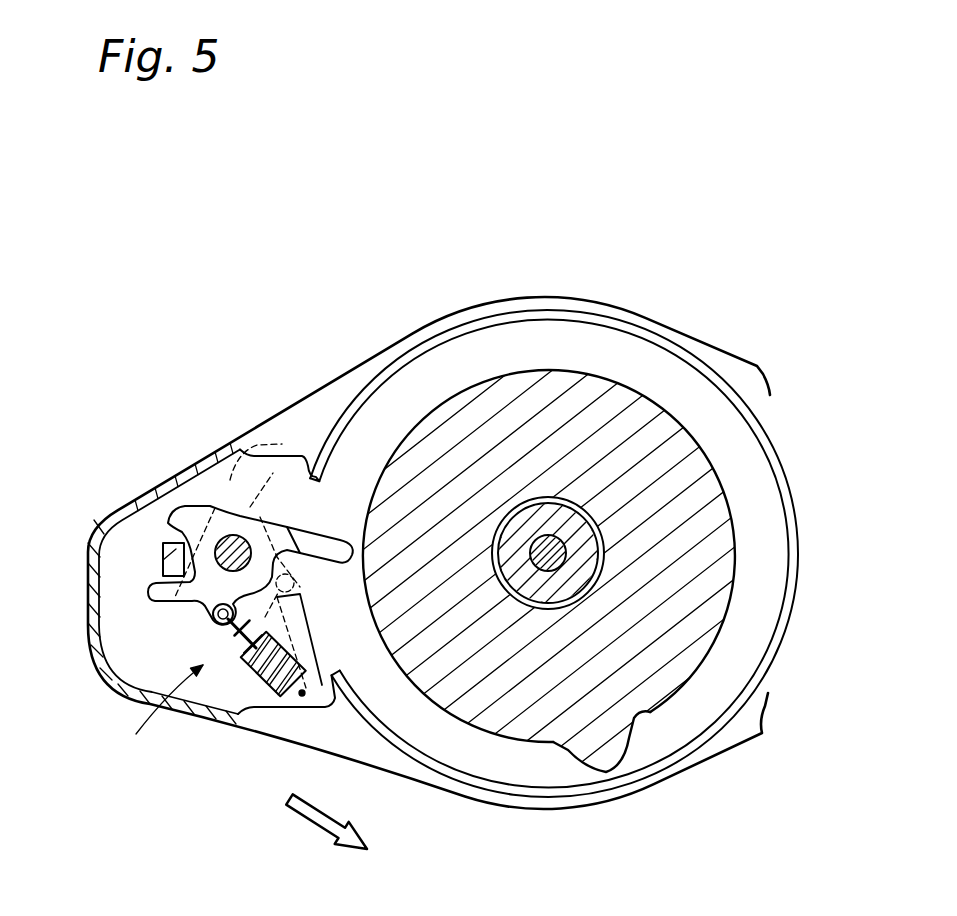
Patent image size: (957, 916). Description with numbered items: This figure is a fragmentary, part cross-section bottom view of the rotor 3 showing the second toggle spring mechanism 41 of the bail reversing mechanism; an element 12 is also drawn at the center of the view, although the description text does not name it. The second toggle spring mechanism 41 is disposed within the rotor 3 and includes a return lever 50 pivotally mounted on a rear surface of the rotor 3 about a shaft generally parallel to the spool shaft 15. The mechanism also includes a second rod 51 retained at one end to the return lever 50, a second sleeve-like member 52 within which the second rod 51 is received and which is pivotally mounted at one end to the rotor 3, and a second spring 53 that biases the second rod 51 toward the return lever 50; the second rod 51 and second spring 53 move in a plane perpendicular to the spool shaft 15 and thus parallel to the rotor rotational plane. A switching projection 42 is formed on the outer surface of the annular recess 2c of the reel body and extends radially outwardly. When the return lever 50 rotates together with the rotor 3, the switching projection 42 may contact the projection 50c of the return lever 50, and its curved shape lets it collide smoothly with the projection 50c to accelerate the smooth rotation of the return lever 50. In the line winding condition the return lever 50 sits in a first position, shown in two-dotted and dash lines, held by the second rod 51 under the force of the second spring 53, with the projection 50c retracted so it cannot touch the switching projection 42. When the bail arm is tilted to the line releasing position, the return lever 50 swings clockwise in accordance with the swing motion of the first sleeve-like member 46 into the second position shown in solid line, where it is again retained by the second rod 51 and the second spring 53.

The rotor 3 is at (522, 304).
The annular recess 2c is at (717, 468).
The reel hub 12 is at (562, 518).
The spool shaft 15 is at (563, 517).
The switching projection 42 is at (633, 726).
The return lever 50 is at (199, 505).
The projection 50c is at (340, 543).
The first sleeve-like member 46 is at (170, 555).
The second rod 51 is at (230, 632).
The second sleeve-like member 52 is at (311, 673).
The second spring 53 is at (253, 668).
The second toggle spring mechanism 41 is at (157, 721).